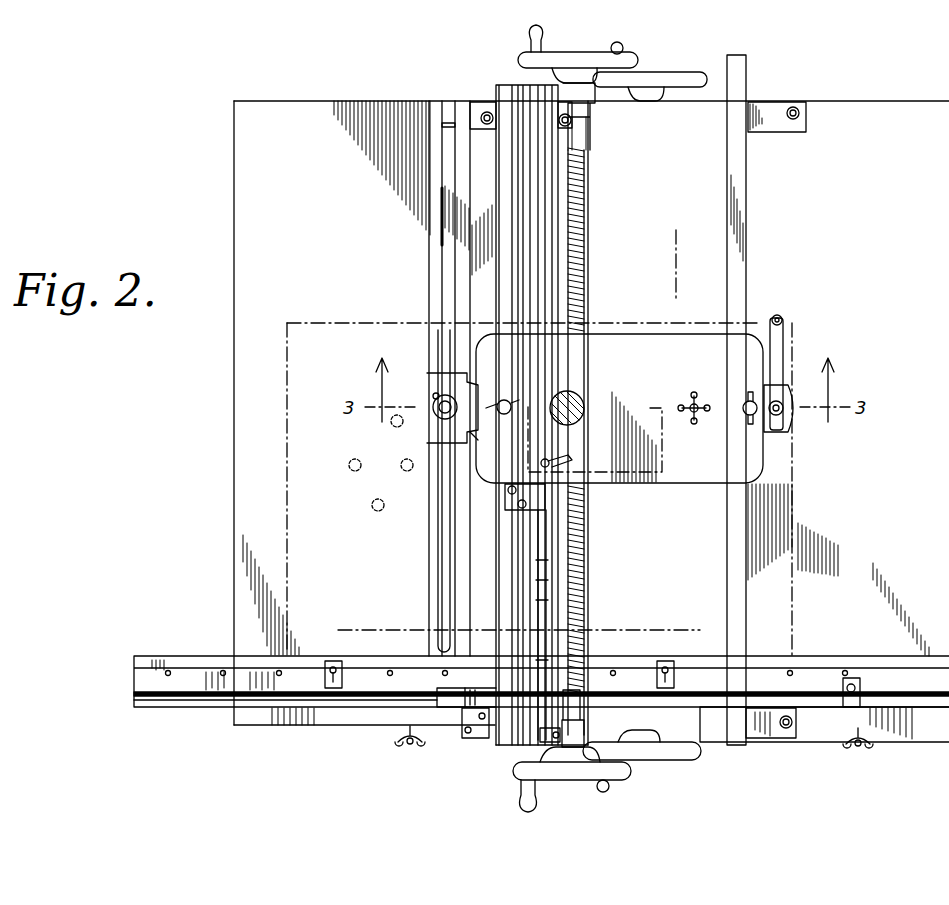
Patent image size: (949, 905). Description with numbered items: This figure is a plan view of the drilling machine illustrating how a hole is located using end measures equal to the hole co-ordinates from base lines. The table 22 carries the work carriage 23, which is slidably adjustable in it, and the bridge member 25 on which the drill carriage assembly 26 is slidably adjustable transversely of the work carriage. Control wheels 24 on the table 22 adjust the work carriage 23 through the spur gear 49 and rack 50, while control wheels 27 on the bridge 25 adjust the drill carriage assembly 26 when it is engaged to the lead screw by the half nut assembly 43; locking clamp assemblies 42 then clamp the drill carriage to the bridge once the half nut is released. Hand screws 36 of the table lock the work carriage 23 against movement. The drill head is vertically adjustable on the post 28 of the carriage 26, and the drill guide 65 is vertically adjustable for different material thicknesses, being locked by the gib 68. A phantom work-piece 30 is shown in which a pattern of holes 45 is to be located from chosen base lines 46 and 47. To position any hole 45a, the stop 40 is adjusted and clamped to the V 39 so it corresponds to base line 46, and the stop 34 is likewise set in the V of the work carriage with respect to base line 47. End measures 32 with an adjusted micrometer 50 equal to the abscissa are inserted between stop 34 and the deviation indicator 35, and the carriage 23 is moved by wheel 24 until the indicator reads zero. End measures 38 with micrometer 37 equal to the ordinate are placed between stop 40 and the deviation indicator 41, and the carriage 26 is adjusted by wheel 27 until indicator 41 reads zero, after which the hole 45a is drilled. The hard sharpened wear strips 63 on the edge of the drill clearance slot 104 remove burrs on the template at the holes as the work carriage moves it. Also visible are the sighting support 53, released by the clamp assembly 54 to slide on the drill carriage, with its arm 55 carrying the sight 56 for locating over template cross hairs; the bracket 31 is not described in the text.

The table 22 is at (872, 100).
The work carriage 23 is at (134, 680).
The control wheels 24 is at (690, 74).
The bridge member 25 is at (726, 540).
The drill carriage assembly 26 is at (656, 484).
The control wheels 27 is at (530, 58).
The post 28 is at (576, 394).
The work-piece 30 is at (318, 322).
The rail bracket 31 is at (332, 660).
The end measures 32 is at (812, 730).
The stop 34 is at (852, 678).
The deviation indicator 35 is at (462, 722).
The hand screws 36 is at (394, 738).
The micrometer 37 is at (545, 694).
The end measures 38 is at (544, 618).
The V 39 is at (586, 178).
The stop 40 is at (548, 750).
The deviation indicator 41 is at (548, 504).
The locking clamp assemblies 42 is at (508, 400).
The half nut assembly 43 is at (564, 458).
The pattern of holes 45 is at (372, 505).
The hole 45a is at (440, 410).
The base line 46 is at (380, 630).
The base line 47 is at (676, 256).
The spur gear 49 is at (186, 700).
The rack 50 is at (440, 688).
The sighting support 53 is at (772, 434).
The clamp assembly 54 is at (694, 397).
The arm 55 is at (782, 345).
The sight 56 is at (778, 315).
The wear strips 63 is at (460, 262).
The drill guide 65 is at (446, 470).
The gib 68 is at (476, 436).
The drill clearance slot 104 is at (447, 288).